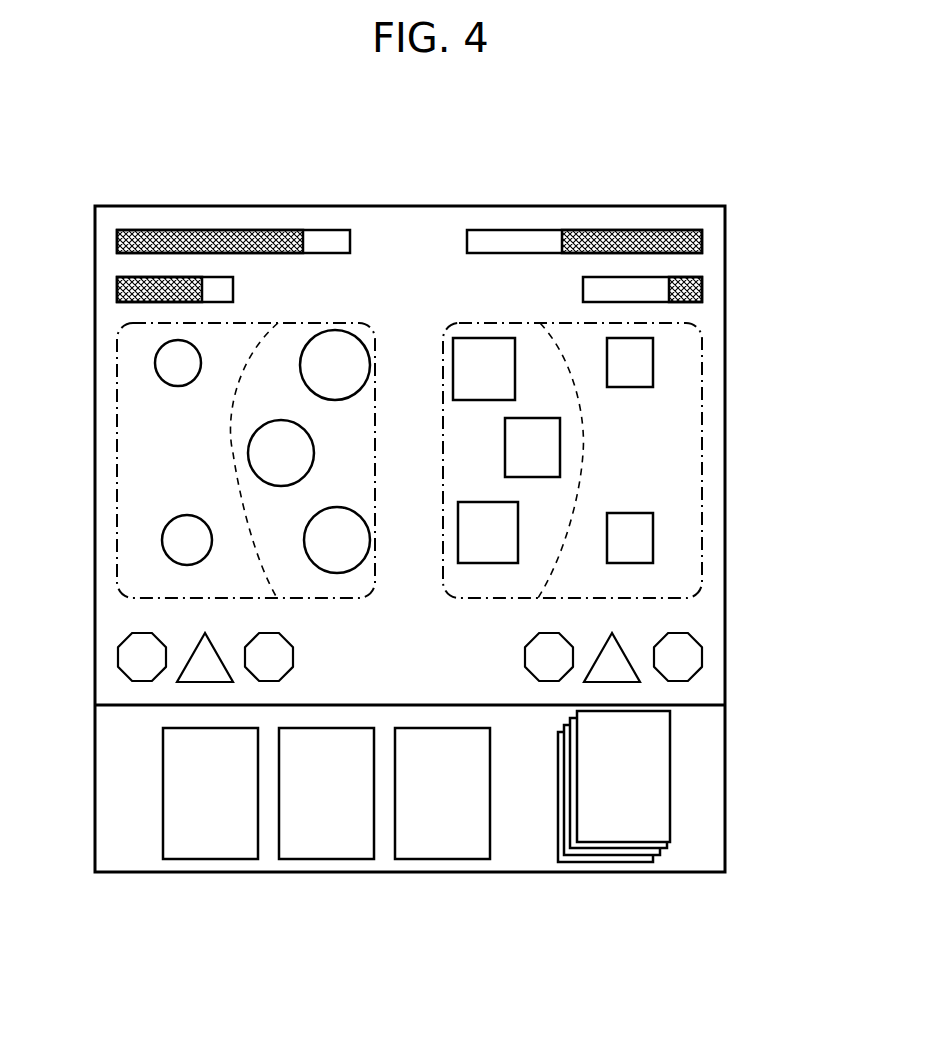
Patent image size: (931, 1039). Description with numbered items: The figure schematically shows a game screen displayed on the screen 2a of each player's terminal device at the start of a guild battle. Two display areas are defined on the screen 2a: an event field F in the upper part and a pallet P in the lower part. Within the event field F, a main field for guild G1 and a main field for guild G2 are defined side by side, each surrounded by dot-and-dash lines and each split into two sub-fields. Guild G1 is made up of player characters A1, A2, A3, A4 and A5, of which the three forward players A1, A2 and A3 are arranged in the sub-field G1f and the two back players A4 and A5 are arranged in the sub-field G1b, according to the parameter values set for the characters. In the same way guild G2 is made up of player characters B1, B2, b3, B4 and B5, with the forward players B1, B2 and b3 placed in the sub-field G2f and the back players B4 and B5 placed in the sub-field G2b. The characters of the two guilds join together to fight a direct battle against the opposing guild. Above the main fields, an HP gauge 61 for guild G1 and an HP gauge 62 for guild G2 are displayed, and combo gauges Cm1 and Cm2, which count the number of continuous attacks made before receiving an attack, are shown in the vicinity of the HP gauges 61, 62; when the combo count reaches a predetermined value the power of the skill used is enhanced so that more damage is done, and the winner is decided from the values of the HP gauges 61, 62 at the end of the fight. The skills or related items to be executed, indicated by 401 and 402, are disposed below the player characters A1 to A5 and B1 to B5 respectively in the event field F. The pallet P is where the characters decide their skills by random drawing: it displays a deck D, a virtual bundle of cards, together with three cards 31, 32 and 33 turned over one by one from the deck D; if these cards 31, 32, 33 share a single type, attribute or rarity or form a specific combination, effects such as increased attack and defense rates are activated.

The screen 2a is at (726, 246).
The HP gauge 61 is at (235, 230).
The HP gauge 62 is at (632, 230).
The combo gauge Cm1 is at (117, 302).
The combo gauge Cm2 is at (702, 292).
The event field F is at (423, 302).
The guild G1 is at (214, 460).
The guild G2 is at (603, 460).
The sub-field G1b is at (190, 409).
The sub-field G1f is at (347, 424).
The sub-field G2f is at (475, 434).
The sub-field G2b is at (622, 415).
The player character A1 is at (335, 365).
The player character A2 is at (281, 453).
The player character A3 is at (337, 540).
The player character A4 is at (178, 363).
The player character A5 is at (187, 540).
The player character B1 is at (484, 369).
The player character B2 is at (532, 447).
The player character b3 is at (488, 532).
The player character B4 is at (630, 362).
The player character B5 is at (630, 538).
The skill items 401 is at (112, 629).
The skill items 402 is at (706, 620).
The pallet P is at (107, 772).
The card 31 is at (210, 793).
The card 32 is at (326, 793).
The card 33 is at (442, 793).
The deck D is at (670, 777).